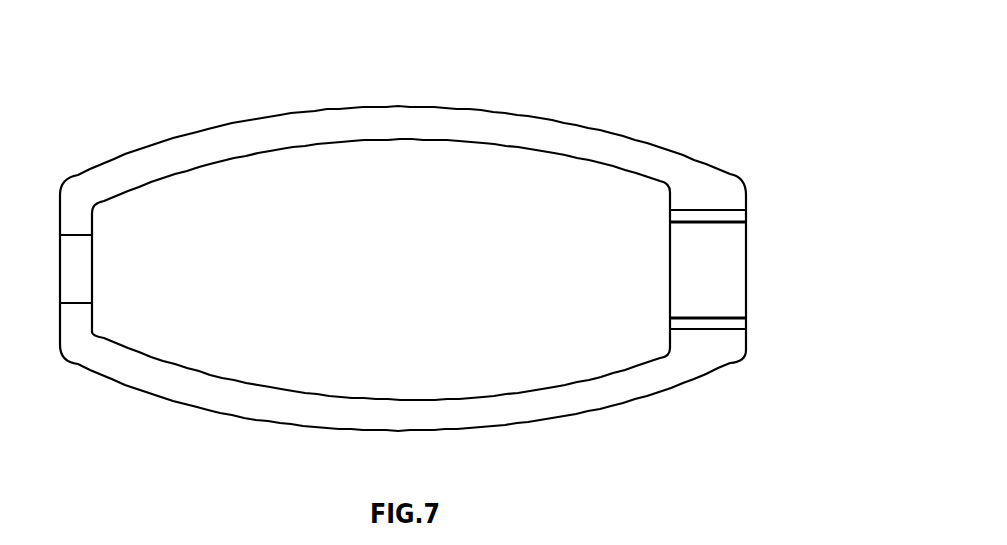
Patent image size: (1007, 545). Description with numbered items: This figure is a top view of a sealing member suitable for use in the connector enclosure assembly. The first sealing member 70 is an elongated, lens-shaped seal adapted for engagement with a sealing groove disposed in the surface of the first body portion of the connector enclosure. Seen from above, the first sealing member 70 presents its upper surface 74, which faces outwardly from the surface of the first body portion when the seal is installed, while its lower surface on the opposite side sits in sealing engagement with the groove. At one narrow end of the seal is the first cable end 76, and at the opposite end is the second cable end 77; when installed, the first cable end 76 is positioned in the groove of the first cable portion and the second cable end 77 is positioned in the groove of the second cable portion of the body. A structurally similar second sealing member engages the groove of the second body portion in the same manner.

The first sealing member 70 is at (566, 110).
The upper surface 74 is at (580, 402).
The first cable end 76 is at (78, 274).
The second cable end 77 is at (725, 252).